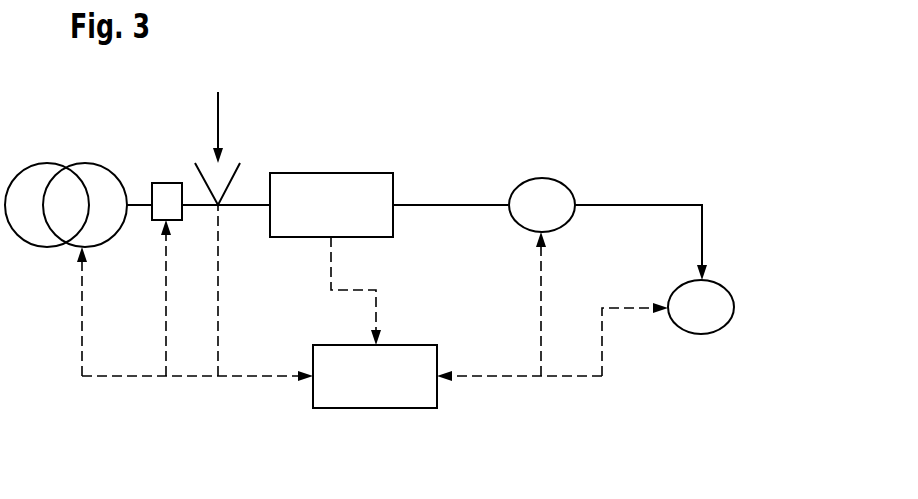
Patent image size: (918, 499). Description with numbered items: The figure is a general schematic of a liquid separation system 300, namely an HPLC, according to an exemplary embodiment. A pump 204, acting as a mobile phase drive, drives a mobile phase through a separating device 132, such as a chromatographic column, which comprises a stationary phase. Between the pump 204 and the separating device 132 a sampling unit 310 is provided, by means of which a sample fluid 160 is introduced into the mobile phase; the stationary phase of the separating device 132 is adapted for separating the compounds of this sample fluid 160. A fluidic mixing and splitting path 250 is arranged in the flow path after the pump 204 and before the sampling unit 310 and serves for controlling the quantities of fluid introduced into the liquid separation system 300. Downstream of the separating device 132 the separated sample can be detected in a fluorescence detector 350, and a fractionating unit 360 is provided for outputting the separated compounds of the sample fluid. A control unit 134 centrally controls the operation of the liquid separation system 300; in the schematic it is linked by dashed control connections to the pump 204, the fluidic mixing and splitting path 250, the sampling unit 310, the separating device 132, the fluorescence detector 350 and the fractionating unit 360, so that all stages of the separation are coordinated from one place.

The liquid separation system 300 is at (711, 162).
The pump 204 is at (62, 193).
The fluidic mixing and splitting path 250 is at (167, 187).
The sample fluid 160 is at (216, 122).
The sampling unit 310 is at (230, 180).
The separating device 132 is at (333, 193).
The fluorescence detector 350 is at (540, 193).
The fractionating unit 360 is at (700, 322).
The control unit 134 is at (376, 397).